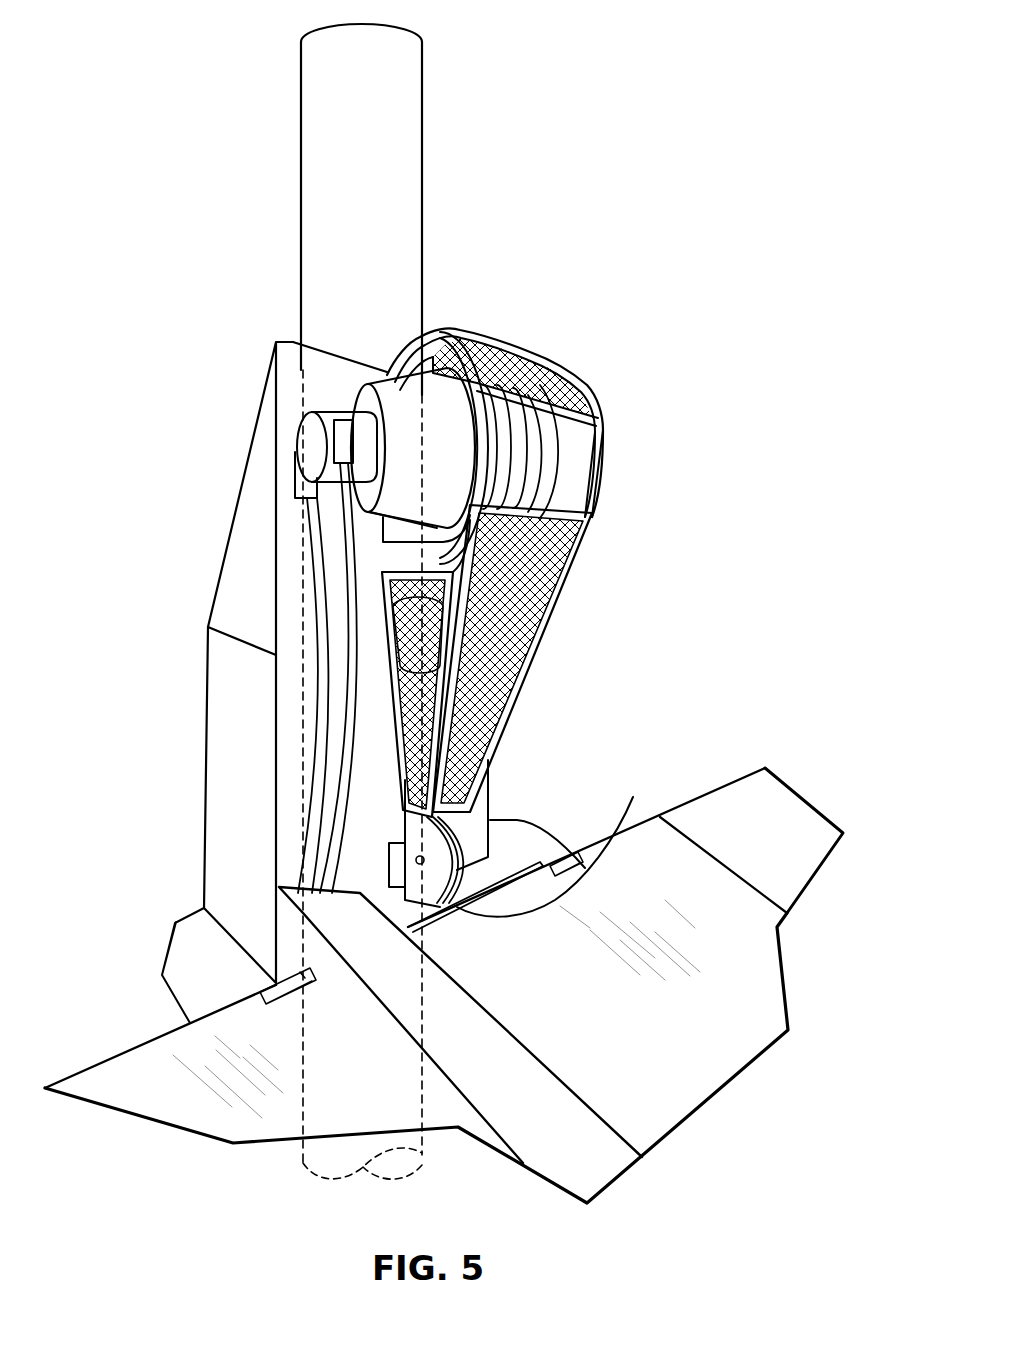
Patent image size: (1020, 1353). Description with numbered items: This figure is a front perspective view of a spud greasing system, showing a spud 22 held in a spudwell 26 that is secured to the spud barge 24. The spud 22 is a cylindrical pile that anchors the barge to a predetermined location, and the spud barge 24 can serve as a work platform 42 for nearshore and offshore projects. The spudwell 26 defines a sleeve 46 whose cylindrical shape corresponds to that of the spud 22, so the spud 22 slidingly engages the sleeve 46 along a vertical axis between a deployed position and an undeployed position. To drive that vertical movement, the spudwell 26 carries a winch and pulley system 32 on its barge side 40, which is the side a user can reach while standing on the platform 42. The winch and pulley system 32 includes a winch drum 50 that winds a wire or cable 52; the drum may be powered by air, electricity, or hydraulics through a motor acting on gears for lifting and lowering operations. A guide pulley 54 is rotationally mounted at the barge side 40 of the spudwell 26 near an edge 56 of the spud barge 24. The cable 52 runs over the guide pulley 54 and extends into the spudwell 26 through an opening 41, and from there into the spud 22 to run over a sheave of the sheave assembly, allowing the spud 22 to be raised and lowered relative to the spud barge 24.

The spud 22 is at (388, 183).
The spud barge 24 is at (737, 802).
The spudwell 26 is at (242, 593).
The winch and pulley system 32 is at (560, 487).
The barge side 40 is at (492, 667).
The opening 41 is at (396, 868).
The work platform 42 is at (712, 978).
The sleeve 46 is at (293, 558).
The winch drum 50 is at (432, 397).
The cable 52 is at (527, 437).
The guide pulley 54 is at (452, 842).
The edge 56 is at (613, 837).